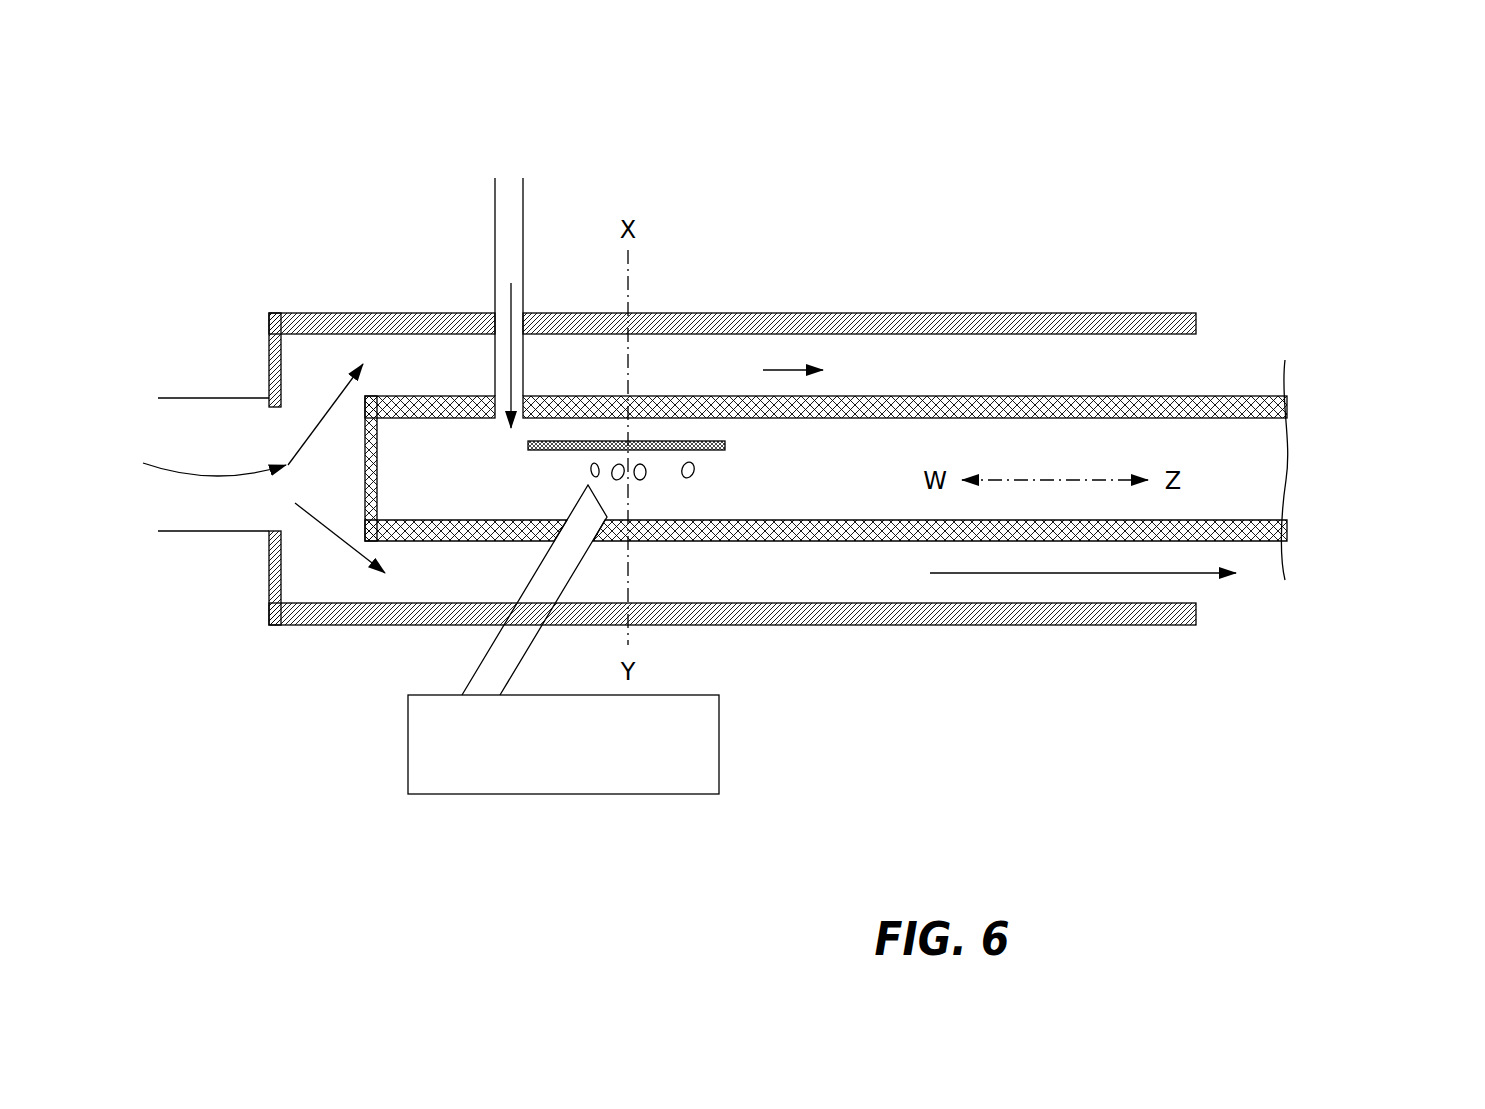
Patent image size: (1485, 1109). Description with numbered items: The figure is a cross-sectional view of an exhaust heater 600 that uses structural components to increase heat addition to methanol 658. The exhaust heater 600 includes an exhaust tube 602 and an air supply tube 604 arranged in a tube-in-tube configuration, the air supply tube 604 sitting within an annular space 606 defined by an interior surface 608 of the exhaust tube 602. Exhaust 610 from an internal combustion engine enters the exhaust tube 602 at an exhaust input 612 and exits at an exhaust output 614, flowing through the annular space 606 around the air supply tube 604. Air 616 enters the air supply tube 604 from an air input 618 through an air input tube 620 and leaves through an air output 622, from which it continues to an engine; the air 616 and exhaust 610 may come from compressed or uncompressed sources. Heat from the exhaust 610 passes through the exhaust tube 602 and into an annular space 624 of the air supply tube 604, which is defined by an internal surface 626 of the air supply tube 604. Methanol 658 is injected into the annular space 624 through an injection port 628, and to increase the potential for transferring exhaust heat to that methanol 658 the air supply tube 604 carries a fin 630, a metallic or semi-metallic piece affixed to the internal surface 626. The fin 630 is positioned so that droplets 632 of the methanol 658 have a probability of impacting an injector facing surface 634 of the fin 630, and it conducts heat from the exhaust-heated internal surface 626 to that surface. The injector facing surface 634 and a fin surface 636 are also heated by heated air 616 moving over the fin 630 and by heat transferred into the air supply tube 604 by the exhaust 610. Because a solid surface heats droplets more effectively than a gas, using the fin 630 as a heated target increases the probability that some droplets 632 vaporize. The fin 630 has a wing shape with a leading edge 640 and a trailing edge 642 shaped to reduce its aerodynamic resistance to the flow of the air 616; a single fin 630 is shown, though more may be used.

The exhaust heater 600 is at (1267, 157).
The exhaust tube 602 is at (667, 308).
The air supply tube 604 is at (1030, 396).
The annular space 606 is at (930, 358).
The interior surface 608 is at (757, 318).
The exhaust 610 is at (215, 478).
The exhaust input 612 is at (166, 432).
The exhaust output 614 is at (1187, 359).
The air 616 is at (503, 308).
The air input 618 is at (514, 176).
The air input tube 620 is at (510, 233).
The air output 622 is at (1254, 490).
The annular space 624 is at (823, 482).
The internal surface 626 is at (1132, 417).
The injection port 628 is at (585, 485).
The fin 630 is at (698, 450).
The droplets 632 is at (652, 482).
The injector facing surface 634 is at (717, 450).
The fin surface 636 is at (645, 445).
The leading edge 640 is at (530, 452).
The trailing edge 642 is at (730, 445).
The methanol 658 is at (563, 744).